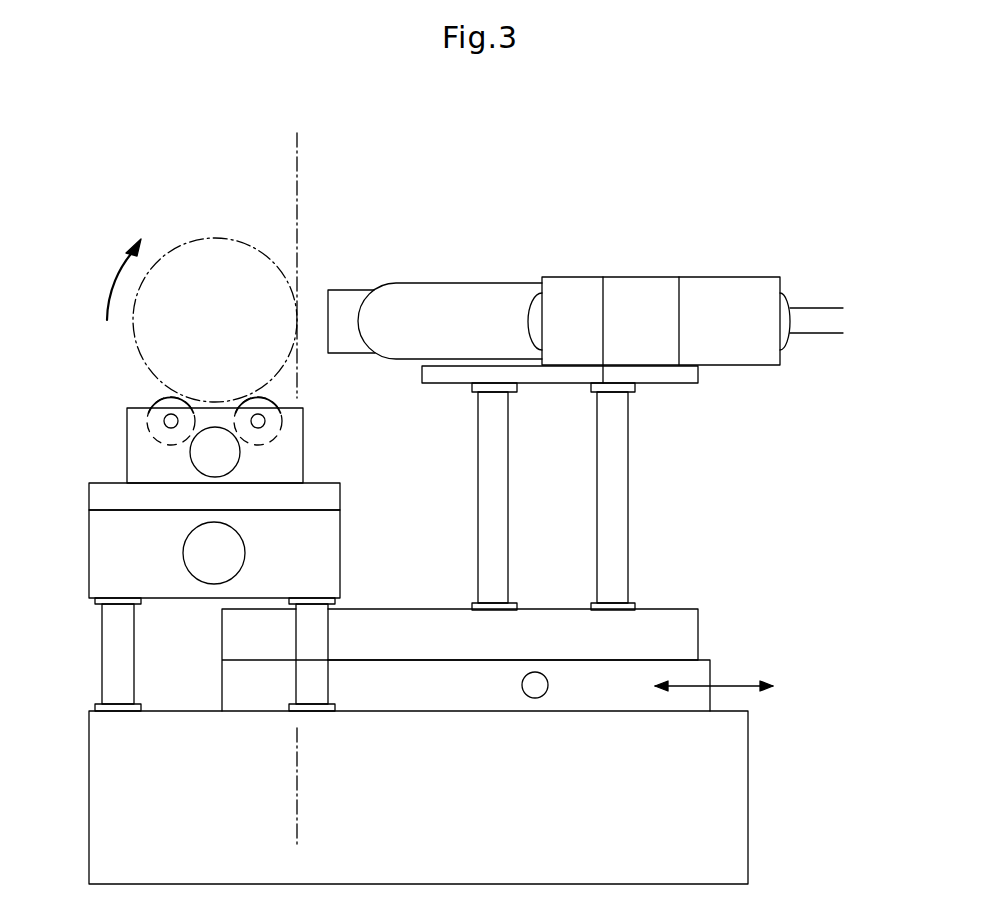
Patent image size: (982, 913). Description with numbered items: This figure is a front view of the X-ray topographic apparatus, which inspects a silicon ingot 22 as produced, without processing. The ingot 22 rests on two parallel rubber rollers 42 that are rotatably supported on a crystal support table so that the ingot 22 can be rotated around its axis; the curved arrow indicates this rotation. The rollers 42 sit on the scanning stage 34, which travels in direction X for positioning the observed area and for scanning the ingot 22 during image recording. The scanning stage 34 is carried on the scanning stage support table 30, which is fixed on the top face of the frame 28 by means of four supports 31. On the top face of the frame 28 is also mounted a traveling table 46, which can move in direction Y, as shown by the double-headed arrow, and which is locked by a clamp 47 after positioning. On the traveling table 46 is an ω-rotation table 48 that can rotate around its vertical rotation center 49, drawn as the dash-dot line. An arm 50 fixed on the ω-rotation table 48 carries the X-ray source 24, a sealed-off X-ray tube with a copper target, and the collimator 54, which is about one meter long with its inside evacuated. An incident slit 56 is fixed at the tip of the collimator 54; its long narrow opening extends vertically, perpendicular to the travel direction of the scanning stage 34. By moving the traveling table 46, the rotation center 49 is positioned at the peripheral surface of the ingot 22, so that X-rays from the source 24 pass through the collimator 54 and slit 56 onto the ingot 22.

The silicon ingot 22 is at (207, 238).
The X-ray source 24 is at (626, 277).
The frame 28 is at (748, 787).
The scanning stage support table 30 is at (89, 555).
The supports 31 is at (102, 647).
The scanning stage 34 is at (89, 497).
The rollers 42 is at (155, 400).
The traveling table 46 is at (712, 672).
The clamp 47 is at (542, 695).
The ω-rotation table 48 is at (700, 627).
The rotation center 49 is at (297, 196).
The arm 50 is at (673, 383).
The collimator 54 is at (448, 283).
The incident slit 56 is at (355, 288).